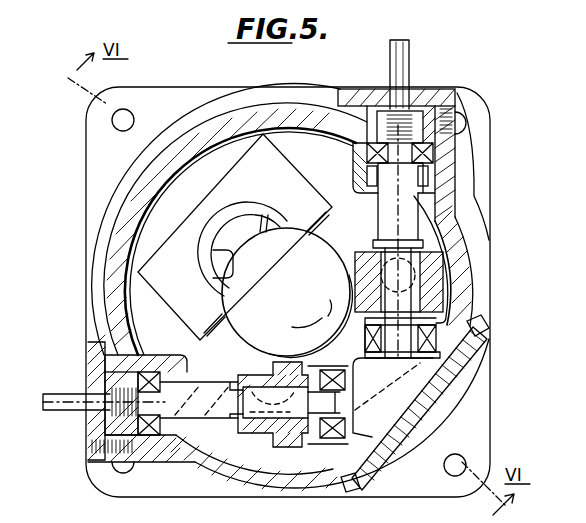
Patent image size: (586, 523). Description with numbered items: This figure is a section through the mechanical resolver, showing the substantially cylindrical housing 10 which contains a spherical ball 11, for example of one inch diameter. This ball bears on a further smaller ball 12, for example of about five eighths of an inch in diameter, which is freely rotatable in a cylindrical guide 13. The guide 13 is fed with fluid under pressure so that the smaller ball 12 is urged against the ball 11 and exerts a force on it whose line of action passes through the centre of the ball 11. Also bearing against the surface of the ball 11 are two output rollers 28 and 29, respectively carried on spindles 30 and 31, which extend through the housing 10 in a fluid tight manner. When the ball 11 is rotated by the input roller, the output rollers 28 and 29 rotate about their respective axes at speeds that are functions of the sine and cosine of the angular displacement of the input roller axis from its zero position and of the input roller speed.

The housing 10 is at (461, 233).
The spherical ball 11 is at (298, 280).
The smaller ball 12 is at (235, 230).
The cylindrical guide 13 is at (208, 246).
The output roller 28 is at (290, 448).
The output roller 29 is at (440, 294).
The spindle 30 is at (53, 398).
The spindle 31 is at (402, 63).